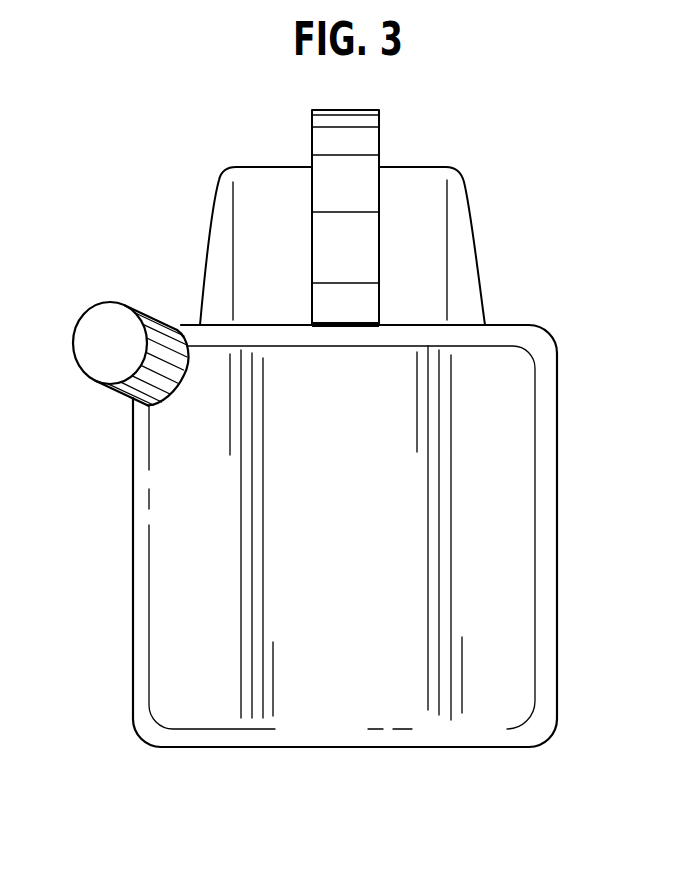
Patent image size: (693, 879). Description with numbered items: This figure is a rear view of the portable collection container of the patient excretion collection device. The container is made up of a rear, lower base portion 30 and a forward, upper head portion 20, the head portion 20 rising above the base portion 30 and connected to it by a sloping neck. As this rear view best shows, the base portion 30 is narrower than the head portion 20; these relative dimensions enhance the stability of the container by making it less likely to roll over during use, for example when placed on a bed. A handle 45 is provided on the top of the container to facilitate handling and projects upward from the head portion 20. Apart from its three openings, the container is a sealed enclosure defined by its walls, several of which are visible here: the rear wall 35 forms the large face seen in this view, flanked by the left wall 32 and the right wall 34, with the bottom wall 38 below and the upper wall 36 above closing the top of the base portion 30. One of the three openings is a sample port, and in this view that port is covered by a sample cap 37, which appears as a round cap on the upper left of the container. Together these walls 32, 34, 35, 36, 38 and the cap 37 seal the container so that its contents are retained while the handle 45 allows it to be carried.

The head portion 20 is at (618, 108).
The base portion 30 is at (383, 545).
The left wall 32 is at (133, 630).
The right wall 34 is at (557, 653).
The rear wall 35 is at (329, 682).
The upper wall 36 is at (510, 328).
The sample cap 37 is at (113, 322).
The bottom wall 38 is at (405, 747).
The handle 45 is at (375, 145).